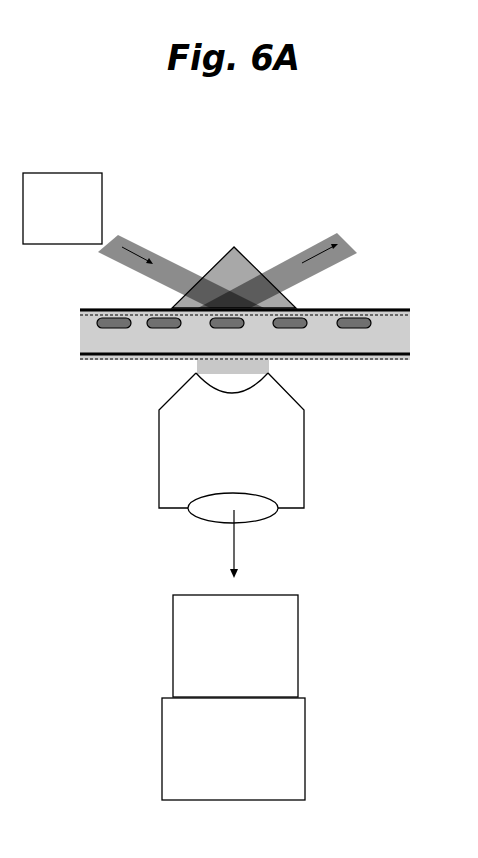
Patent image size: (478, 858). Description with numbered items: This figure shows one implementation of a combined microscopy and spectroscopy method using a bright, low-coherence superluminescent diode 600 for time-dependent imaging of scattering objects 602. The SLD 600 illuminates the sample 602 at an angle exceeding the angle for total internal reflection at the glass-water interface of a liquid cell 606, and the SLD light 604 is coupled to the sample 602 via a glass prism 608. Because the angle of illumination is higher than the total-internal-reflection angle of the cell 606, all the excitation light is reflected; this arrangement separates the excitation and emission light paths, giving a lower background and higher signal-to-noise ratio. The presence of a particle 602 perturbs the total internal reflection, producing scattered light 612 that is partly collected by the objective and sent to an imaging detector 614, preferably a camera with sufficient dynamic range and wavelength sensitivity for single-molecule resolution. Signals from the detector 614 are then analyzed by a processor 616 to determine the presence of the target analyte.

The superluminescent diode (SLD) 600 is at (78, 207).
The scattering objects 602 is at (242, 322).
The SLD light 604 is at (145, 262).
The liquid cell 606 is at (138, 362).
The glass prism 608 is at (242, 264).
The scattered light 612 is at (237, 537).
The imaging detector 614 is at (227, 631).
The processor 616 is at (214, 733).